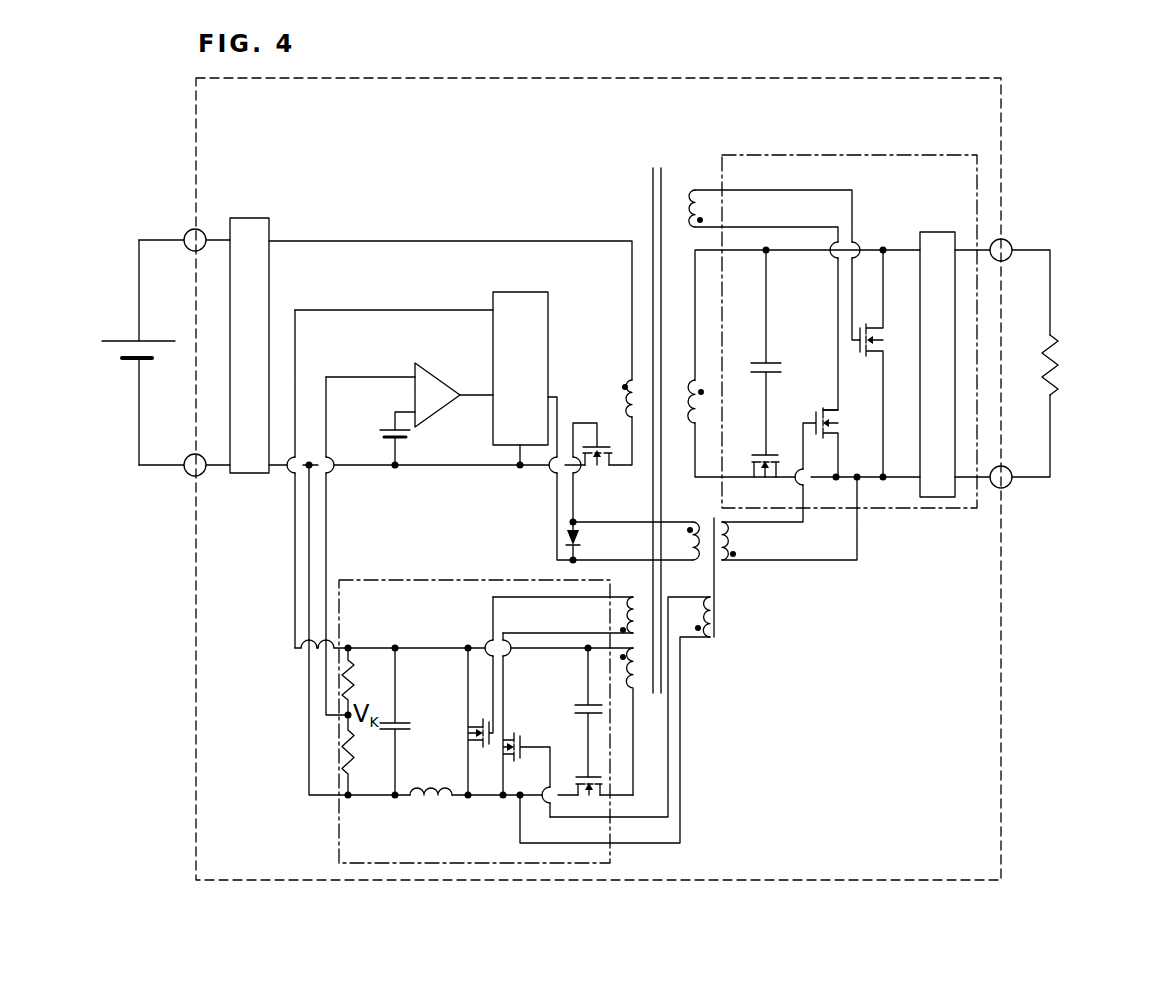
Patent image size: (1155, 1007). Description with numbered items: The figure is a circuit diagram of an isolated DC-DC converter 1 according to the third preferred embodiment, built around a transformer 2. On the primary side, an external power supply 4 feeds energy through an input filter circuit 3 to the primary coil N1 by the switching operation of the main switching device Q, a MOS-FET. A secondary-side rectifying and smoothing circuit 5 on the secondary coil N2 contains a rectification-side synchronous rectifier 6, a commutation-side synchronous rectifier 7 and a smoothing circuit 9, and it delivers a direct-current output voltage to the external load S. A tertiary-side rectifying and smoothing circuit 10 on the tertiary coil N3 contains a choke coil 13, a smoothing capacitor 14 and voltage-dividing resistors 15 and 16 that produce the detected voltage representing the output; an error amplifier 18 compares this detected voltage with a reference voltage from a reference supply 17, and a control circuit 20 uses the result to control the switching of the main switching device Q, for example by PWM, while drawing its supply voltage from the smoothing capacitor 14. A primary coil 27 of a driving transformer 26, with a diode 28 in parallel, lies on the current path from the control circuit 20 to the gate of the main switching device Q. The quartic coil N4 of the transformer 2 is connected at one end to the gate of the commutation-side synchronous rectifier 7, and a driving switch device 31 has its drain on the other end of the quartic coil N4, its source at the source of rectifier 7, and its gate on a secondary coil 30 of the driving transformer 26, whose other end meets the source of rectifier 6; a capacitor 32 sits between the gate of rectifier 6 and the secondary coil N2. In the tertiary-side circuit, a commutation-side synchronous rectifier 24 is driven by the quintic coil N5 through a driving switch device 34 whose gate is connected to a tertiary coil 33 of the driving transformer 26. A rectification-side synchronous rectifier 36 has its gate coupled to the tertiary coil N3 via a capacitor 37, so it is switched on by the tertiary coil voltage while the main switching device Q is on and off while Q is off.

The isolated DC-DC converter 1 is at (1001, 135).
The transformer 2 is at (658, 165).
The input filter circuit 3 is at (252, 220).
The external power supply 4 is at (116, 341).
The secondary-side rectifying and smoothing circuit 5 is at (840, 154).
The rectification-side synchronous rectifier 6 is at (762, 452).
The commutation-side synchronous rectifier 7 is at (876, 346).
The smoothing circuit 9 is at (935, 232).
The tertiary-side rectifying and smoothing circuit 10 is at (376, 578).
The choke coil 13 is at (428, 788).
The smoothing capacitor 14 is at (398, 718).
The voltage-dividing resistor 15 is at (368, 686).
The voltage-dividing resistor 16 is at (368, 760).
The reference supply 17 is at (390, 432).
The error amplifier 18 is at (434, 384).
The control circuit 20 is at (520, 295).
The commutation-side synchronous rectifier 24 is at (468, 722).
The driving transformer 26 is at (717, 563).
The primary coil of driving transformer 27 is at (695, 520).
The diode 28 is at (584, 541).
The secondary coil of driving transformer 30 is at (738, 548).
The driving switch device 31 is at (820, 410).
The capacitor 32 is at (770, 360).
The tertiary coil of driving transformer 33 is at (707, 640).
The driving switch device 34 is at (512, 733).
The rectification-side synchronous rectifier 36 is at (581, 775).
The capacitor 37 is at (584, 703).
The primary coil N1 is at (620, 388).
The secondary coil N2 is at (693, 380).
The tertiary coil N3 is at (630, 690).
The quartic coil N4 is at (695, 189).
The quintic coil N5 is at (628, 605).
The main switching device Q is at (597, 470).
The external load S is at (1058, 362).